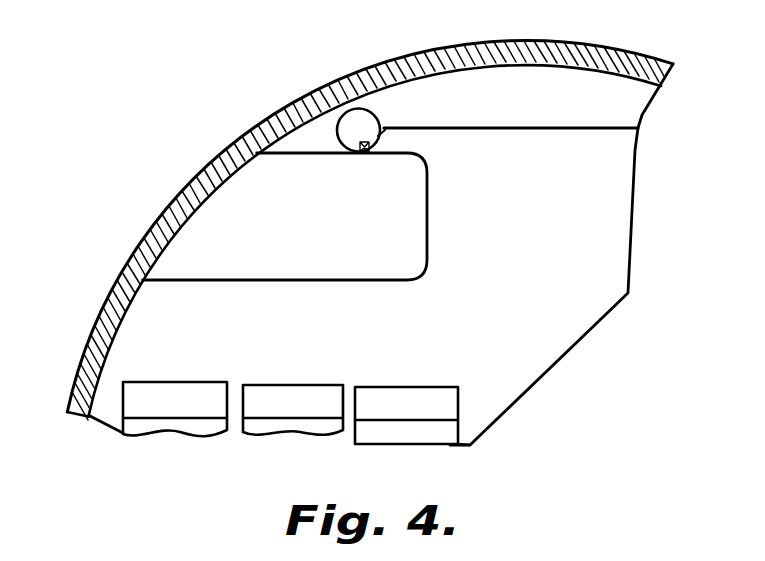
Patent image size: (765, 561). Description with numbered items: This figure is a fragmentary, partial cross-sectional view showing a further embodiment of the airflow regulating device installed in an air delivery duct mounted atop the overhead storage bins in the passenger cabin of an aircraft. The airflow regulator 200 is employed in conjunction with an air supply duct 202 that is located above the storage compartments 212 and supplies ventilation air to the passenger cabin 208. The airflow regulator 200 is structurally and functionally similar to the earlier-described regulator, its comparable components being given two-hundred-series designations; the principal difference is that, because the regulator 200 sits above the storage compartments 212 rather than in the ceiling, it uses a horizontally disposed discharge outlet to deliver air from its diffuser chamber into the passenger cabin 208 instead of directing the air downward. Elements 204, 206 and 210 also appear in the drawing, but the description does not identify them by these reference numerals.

The airflow regulator 200 is at (382, 145).
The air supply duct 202 is at (376, 112).
The curved wall 204 is at (312, 93).
The horizontal rail 206 is at (523, 128).
The passenger cabin 208 is at (541, 332).
The compartments 210 is at (177, 380).
The storage compartments 212 is at (428, 232).